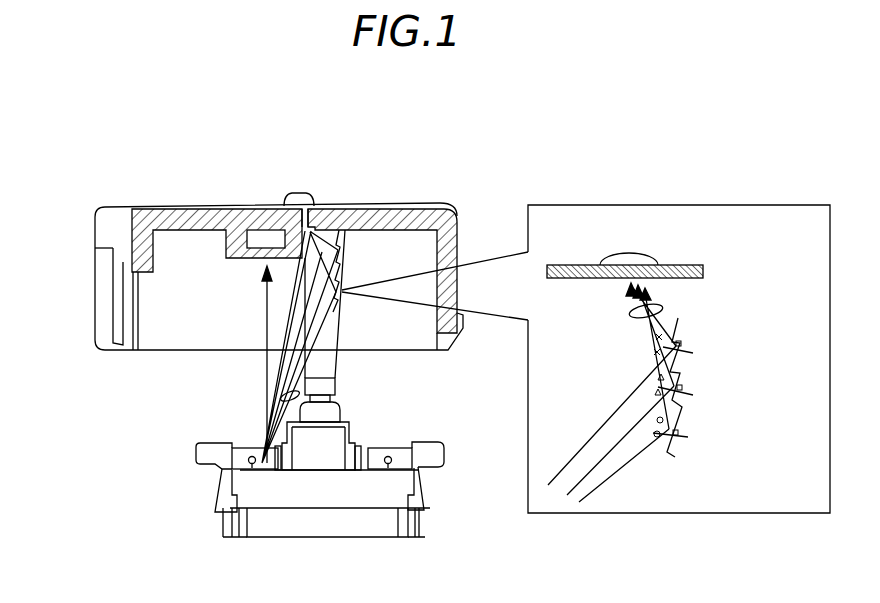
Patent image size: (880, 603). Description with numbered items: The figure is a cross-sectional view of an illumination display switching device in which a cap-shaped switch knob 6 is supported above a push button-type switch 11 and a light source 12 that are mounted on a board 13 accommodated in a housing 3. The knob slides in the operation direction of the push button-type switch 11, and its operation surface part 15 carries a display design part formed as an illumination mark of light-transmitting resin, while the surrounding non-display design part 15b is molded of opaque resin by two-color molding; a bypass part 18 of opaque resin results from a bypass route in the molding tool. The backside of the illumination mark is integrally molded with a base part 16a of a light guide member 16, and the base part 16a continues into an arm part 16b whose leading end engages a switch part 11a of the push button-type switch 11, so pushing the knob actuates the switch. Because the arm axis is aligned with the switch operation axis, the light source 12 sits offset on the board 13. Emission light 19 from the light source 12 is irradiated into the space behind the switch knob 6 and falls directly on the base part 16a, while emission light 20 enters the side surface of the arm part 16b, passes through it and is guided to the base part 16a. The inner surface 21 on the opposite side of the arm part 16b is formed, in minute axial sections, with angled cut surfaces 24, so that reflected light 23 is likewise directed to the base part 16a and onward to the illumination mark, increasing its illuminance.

The housing 3 is at (428, 506).
The switch knob 6 is at (462, 242).
The push button-type switch 11 is at (342, 407).
The switch part 11a is at (337, 386).
The light source 12 is at (252, 470).
The board 13 is at (368, 470).
The operation surface part 15 is at (225, 218).
The non-display design part 15b is at (185, 222).
The light guide member 16 is at (305, 300).
The base part 16a is at (326, 235).
The arm part 16b is at (327, 342).
The bypass part 18 is at (236, 258).
The emission light 19 is at (262, 381).
The emission light 20 is at (282, 397).
The inner surface 21 is at (345, 296).
The reflected light 23 is at (660, 304).
The cut surface 24 is at (682, 326).